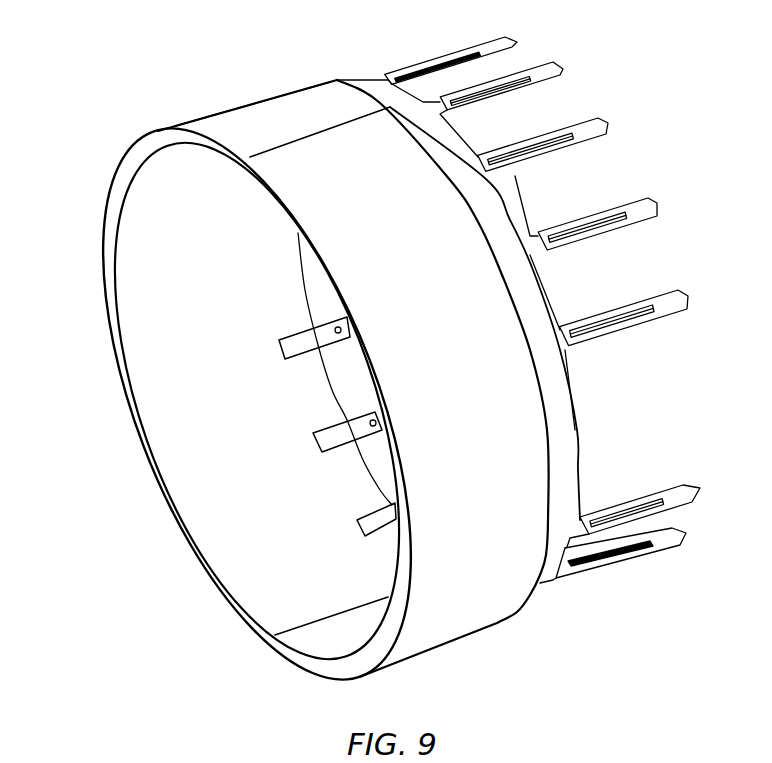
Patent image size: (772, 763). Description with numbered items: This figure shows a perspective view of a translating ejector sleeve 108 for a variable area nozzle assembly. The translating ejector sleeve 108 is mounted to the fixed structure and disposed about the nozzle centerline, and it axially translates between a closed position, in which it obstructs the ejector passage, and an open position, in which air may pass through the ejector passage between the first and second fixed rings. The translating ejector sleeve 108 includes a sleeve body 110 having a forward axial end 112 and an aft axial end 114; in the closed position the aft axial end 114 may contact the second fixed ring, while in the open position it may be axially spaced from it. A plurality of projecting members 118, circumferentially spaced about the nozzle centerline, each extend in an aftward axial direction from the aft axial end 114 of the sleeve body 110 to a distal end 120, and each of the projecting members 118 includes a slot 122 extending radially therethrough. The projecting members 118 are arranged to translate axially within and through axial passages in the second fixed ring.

The translating ejector sleeve 108 is at (206, 96).
The sleeve body 110 is at (278, 98).
The forward axial end 112 is at (118, 342).
The aft axial end 114 is at (565, 420).
The projecting members 118 is at (636, 125).
The distal end 120 is at (610, 118).
The slot 122 is at (560, 118).